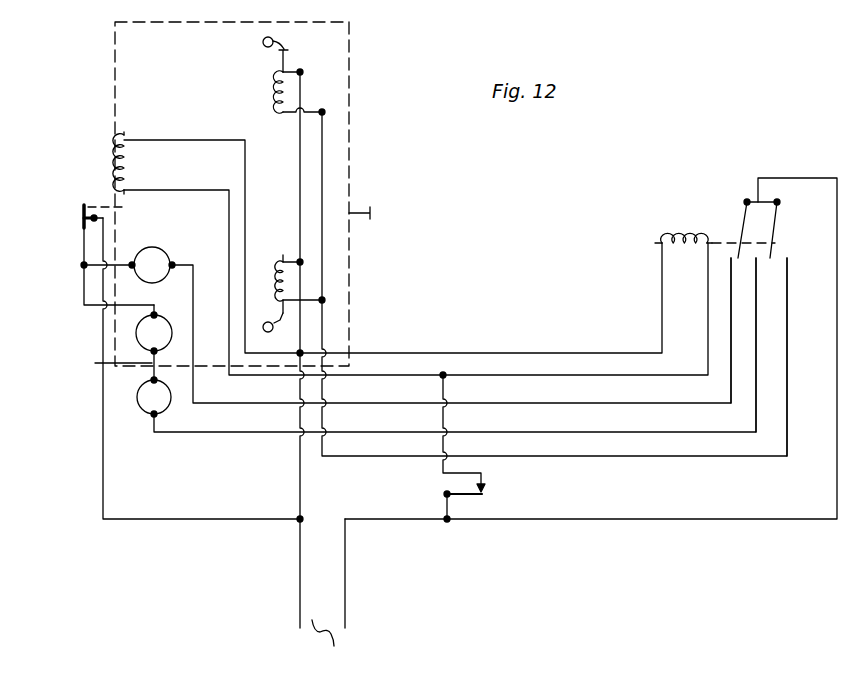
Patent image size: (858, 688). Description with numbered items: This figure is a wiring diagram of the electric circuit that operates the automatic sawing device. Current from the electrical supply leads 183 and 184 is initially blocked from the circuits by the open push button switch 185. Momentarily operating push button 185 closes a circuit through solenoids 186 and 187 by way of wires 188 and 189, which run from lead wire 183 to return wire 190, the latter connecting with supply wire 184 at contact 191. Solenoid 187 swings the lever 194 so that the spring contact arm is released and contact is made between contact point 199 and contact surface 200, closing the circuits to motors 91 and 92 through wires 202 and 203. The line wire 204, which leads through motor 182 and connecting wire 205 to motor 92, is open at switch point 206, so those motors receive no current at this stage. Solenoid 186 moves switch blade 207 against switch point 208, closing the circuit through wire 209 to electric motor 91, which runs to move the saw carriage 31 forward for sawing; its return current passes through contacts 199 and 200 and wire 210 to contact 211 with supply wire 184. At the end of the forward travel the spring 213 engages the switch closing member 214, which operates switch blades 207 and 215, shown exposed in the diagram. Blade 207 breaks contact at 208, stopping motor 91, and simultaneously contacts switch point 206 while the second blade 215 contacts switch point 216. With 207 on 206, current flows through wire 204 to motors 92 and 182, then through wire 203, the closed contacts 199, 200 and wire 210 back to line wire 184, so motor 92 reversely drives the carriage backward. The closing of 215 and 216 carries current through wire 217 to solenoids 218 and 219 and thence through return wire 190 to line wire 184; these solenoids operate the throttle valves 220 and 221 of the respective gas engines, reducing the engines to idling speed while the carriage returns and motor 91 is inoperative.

The saw carriage 31 is at (352, 137).
The spring 213 is at (370, 213).
The throttle valve 220 is at (263, 43).
The solenoid 219 is at (277, 94).
The solenoid 218 is at (278, 282).
The throttle valve 221 is at (262, 334).
The solenoid 187 is at (116, 168).
The lever 194 is at (125, 196).
The contact point 199 is at (80, 212).
The contact surface 200 is at (83, 228).
The wire 202 is at (120, 262).
The electric motor 91 is at (165, 258).
The electric motor 92 is at (157, 314).
The wire 203 is at (125, 306).
The electric motor 182 is at (138, 397).
The connecting wire 205 is at (109, 364).
The wire 210 is at (104, 474).
The line wire 204 is at (238, 440).
The contact 191 is at (302, 352).
The wire 189 is at (528, 340).
The wire 188 is at (562, 374).
The wire 209 is at (580, 404).
The wire 217 is at (586, 457).
The return wire 190 is at (300, 505).
The contact 211 is at (303, 518).
The push button switch 185 is at (484, 496).
The supply lead 184 is at (300, 595).
The supply lead 183 is at (348, 600).
The solenoid 186 is at (703, 238).
The switch closing member 214 is at (742, 212).
The switch blade 207 is at (747, 223).
The switch blade 215 is at (773, 248).
The switch point 216 is at (781, 255).
The switch point 206 is at (749, 255).
The switch point 208 is at (735, 255).